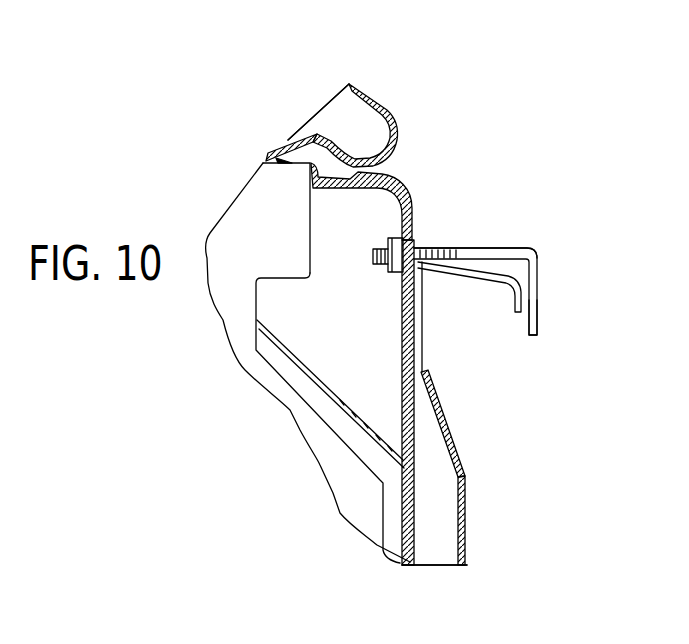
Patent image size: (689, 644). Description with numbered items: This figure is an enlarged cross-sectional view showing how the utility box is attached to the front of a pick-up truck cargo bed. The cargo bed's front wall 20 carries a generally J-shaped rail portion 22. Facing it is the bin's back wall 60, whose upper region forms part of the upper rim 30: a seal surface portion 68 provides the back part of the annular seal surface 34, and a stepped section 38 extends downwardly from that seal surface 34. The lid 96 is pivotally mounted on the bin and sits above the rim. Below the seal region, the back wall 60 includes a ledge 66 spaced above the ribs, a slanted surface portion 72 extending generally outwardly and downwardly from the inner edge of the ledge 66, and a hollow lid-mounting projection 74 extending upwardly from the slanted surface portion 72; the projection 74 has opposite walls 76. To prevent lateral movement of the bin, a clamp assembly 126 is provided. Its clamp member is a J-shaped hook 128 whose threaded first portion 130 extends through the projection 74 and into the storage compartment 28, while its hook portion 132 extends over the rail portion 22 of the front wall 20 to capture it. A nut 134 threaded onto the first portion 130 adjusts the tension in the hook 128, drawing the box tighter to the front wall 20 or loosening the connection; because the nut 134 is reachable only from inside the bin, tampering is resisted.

The front wall 20 is at (467, 478).
The rail portion 22 is at (521, 299).
The storage compartment 28 is at (226, 313).
The upper rim 30 is at (272, 167).
The seal surface 34 is at (297, 150).
The stepped section 38 is at (416, 240).
The back wall 60 is at (418, 538).
The ledge 66 is at (290, 287).
The seal surface portion 68 is at (316, 143).
The slanted surface portion 72 is at (318, 382).
The lid-mounting projection 74 is at (422, 414).
The opposite walls 76 is at (400, 322).
The lid 96 is at (357, 84).
The clamp assembly 126 is at (519, 228).
The J-shaped hook 128 is at (532, 249).
The threaded first portion 130 is at (436, 250).
The hook portion 132 is at (538, 334).
The nut 134 is at (394, 238).